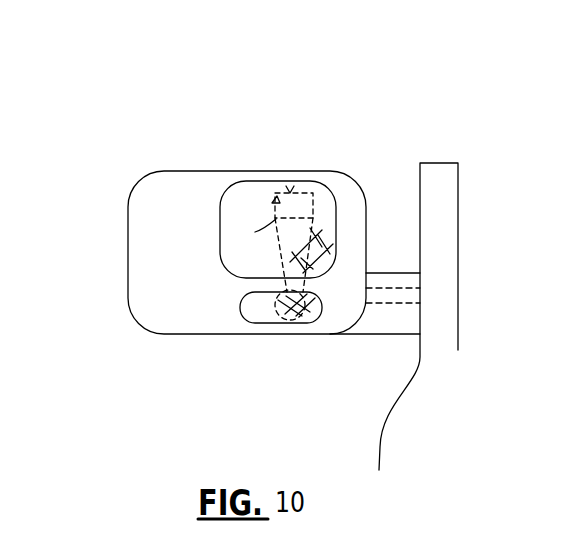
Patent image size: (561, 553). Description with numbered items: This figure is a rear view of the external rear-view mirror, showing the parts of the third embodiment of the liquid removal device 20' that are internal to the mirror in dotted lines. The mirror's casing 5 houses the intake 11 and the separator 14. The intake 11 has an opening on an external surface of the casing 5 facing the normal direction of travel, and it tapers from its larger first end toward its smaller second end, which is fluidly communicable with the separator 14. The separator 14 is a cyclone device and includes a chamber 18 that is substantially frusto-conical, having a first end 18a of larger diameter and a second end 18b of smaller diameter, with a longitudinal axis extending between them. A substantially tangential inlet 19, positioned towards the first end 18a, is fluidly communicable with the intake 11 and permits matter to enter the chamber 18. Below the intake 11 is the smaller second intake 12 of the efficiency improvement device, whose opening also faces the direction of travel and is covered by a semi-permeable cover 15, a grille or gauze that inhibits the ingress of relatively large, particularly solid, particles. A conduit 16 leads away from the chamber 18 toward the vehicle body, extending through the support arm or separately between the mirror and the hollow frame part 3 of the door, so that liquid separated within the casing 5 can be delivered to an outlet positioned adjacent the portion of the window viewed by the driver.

The frame part 3 is at (441, 185).
The casing 5 is at (167, 276).
The intake 11 is at (245, 224).
The second intake 12 is at (282, 312).
The separator 14 is at (276, 200).
The semi-permeable cover 15 is at (252, 311).
The conduit 16 is at (392, 298).
The chamber 18 is at (334, 225).
The first end of the chamber 18a is at (313, 212).
The second end of the chamber 18b is at (303, 300).
The substantially tangential inlet 19 is at (258, 232).
The liquid removal device 20' is at (294, 112).